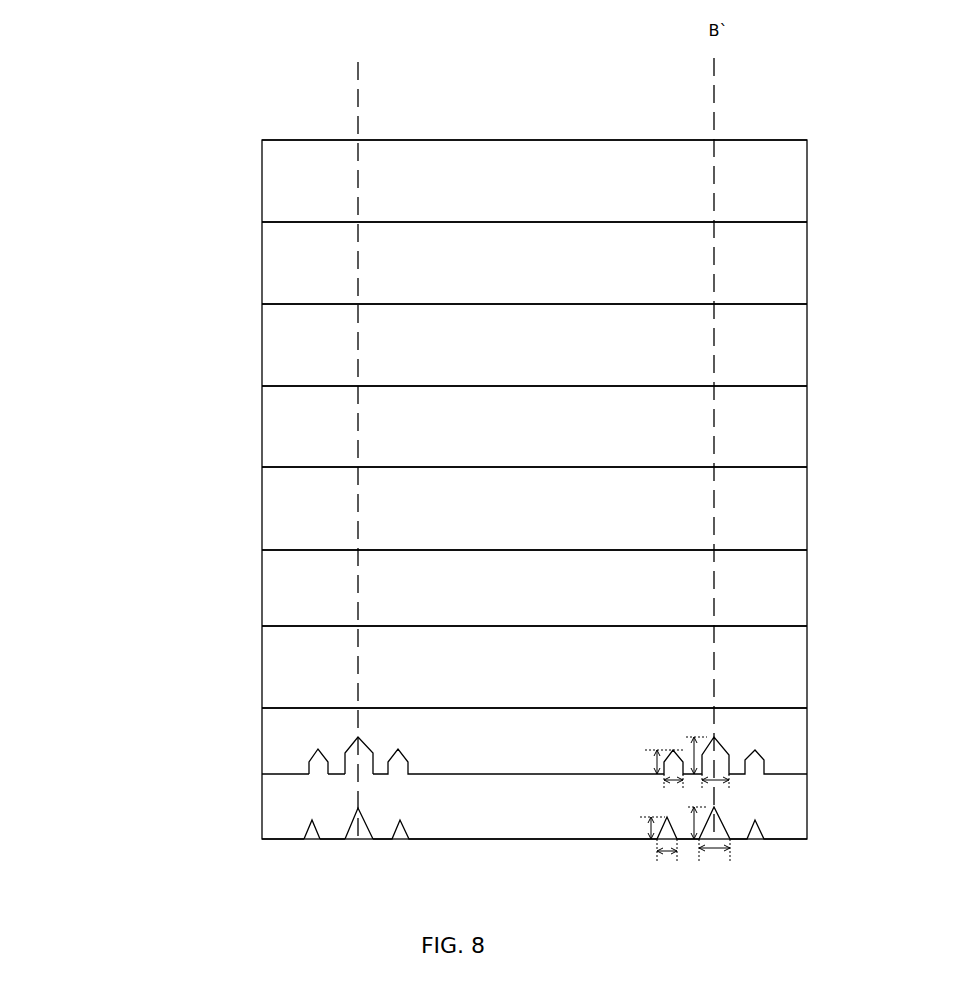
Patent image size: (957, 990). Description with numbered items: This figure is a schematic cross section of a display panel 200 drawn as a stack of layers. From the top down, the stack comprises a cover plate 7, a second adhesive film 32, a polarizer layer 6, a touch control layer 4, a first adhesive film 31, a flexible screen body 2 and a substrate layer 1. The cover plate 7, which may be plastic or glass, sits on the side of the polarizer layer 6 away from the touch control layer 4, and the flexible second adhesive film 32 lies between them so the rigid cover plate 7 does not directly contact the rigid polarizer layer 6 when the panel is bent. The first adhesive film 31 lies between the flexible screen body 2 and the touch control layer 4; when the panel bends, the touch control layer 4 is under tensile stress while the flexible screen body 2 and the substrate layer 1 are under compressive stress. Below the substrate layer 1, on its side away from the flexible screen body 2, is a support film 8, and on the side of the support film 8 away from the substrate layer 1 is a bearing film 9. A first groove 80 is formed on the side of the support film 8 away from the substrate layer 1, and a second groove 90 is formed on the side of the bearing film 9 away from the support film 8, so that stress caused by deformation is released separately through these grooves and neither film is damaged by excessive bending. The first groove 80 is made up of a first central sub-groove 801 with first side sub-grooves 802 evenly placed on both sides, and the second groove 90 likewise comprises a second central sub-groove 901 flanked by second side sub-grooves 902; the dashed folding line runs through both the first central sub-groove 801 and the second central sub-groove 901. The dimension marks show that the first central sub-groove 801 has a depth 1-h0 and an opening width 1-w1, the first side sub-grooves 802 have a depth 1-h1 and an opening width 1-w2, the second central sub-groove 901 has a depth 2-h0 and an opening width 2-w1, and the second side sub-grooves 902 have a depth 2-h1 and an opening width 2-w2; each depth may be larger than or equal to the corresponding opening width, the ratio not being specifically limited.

The display panel 200 is at (512, 57).
The cover plate 7 is at (783, 203).
The second adhesive film 32 is at (782, 282).
The polarizer layer 6 is at (788, 368).
The touch control layer 4 is at (782, 440).
The first adhesive film 31 is at (788, 522).
The flexible screen body 2 is at (788, 613).
The substrate layer 1 is at (793, 697).
The support film 8 is at (793, 753).
The bearing film 9 is at (793, 817).
The first groove 80 is at (130, 645).
The first central sub-groove 801 is at (353, 755).
The first side sub-grooves 802 is at (315, 767).
The second groove 90 is at (187, 873).
The second central sub-groove 901 is at (356, 834).
The second side sub-grooves 902 is at (312, 828).
The depth of the first central sub-groove 1-h0 is at (692, 743).
The depth of the first side sub-grooves 1-h1 is at (657, 763).
The width of the opening of the first central sub-groove 1-w1 is at (724, 783).
The width of the opening of the first side sub-grooves 1-w2 is at (675, 788).
The depth of the second central sub-groove 2-h0 is at (690, 815).
The depth of the second side sub-grooves 2-h1 is at (652, 833).
The width of the opening of the second central sub-groove 2-w1 is at (724, 853).
The width of the opening of the second side sub-grooves 2-w2 is at (669, 860).